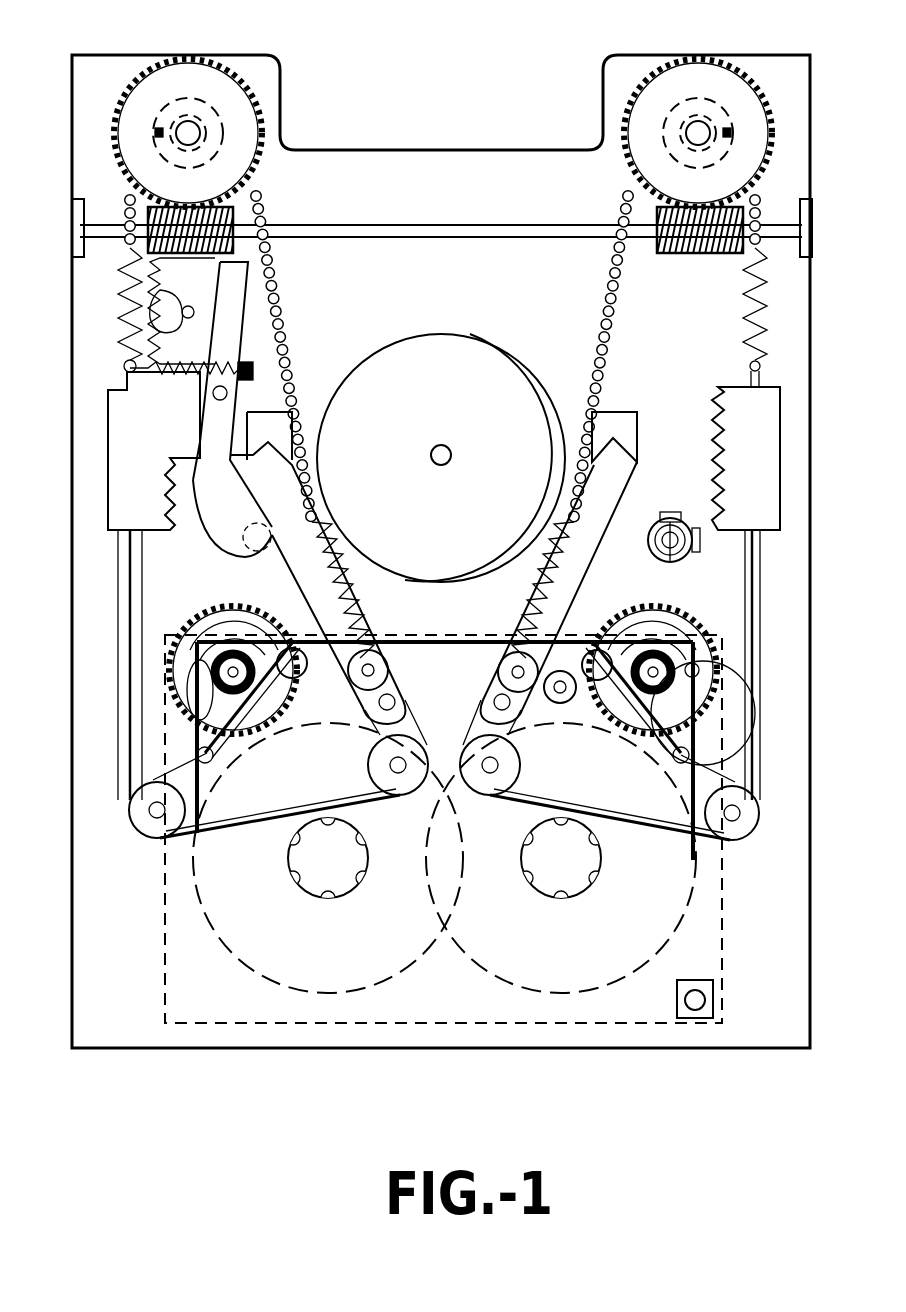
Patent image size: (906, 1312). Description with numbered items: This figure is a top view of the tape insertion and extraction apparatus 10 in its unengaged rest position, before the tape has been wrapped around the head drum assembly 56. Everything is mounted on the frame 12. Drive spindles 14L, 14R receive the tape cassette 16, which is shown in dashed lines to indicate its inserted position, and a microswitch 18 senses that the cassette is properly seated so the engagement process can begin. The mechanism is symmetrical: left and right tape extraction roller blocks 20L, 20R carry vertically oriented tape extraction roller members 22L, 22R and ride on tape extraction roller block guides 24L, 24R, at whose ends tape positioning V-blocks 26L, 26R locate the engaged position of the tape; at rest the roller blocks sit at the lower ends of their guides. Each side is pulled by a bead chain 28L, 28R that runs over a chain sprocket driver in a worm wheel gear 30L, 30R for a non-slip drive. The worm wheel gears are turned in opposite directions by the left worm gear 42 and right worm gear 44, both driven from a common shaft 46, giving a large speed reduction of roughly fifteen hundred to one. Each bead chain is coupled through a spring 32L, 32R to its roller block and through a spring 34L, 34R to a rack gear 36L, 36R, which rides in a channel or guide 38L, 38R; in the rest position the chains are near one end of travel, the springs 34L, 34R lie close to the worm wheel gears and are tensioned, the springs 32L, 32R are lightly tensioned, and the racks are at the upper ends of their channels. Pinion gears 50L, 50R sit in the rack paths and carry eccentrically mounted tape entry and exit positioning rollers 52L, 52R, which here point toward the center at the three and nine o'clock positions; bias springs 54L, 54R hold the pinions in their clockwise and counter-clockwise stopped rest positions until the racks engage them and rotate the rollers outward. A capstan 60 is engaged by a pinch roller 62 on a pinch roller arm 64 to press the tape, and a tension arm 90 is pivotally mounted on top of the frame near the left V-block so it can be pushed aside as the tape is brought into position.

The tape insertion and extraction apparatus 10 is at (452, 117).
The frame 12 is at (275, 60).
The drive spindle 14L is at (300, 893).
The drive spindle 14R is at (520, 900).
The tape cassette 16 is at (165, 935).
The microswitch 18 is at (714, 1000).
The tape extraction roller block 20L is at (396, 700).
The tape extraction roller block 20R is at (492, 708).
The tape extraction roller member 22L is at (389, 664).
The tape extraction roller member 22R is at (500, 645).
The tape extraction roller block guide 24L is at (300, 575).
The tape extraction roller block guide 24R is at (590, 602).
The tape positioning V-block 26L is at (268, 420).
The tape positioning V-block 26R is at (618, 410).
The bead chain 28L is at (272, 286).
The bead chain 28R is at (610, 269).
The worm wheel gear 30L is at (165, 70).
The worm wheel gear 30R is at (668, 68).
The spring 32L is at (340, 574).
The spring 32R is at (548, 576).
The spring 34L is at (118, 288).
The spring 34R is at (750, 312).
The rack gear 36L is at (160, 499).
The rack gear 36R is at (772, 469).
The channel or guide 38L is at (144, 562).
The channel or guide 38R is at (744, 552).
The left worm gear 42 is at (240, 205).
The right worm gear 44 is at (675, 258).
The common shaft 46 is at (478, 222).
The pinion gear 50L is at (296, 736).
The pinion gear 50R is at (680, 616).
The tape entry and exit positioning roller 52L is at (306, 668).
The tape entry and exit positioning roller 52R is at (598, 682).
The bias spring 54L is at (215, 760).
The bias spring 54R is at (655, 700).
The head drum assembly 56 is at (440, 336).
The capstan 60 is at (670, 518).
The pinch roller 62 is at (560, 706).
The pinch roller arm 64 is at (760, 790).
The tension arm 90 is at (245, 330).